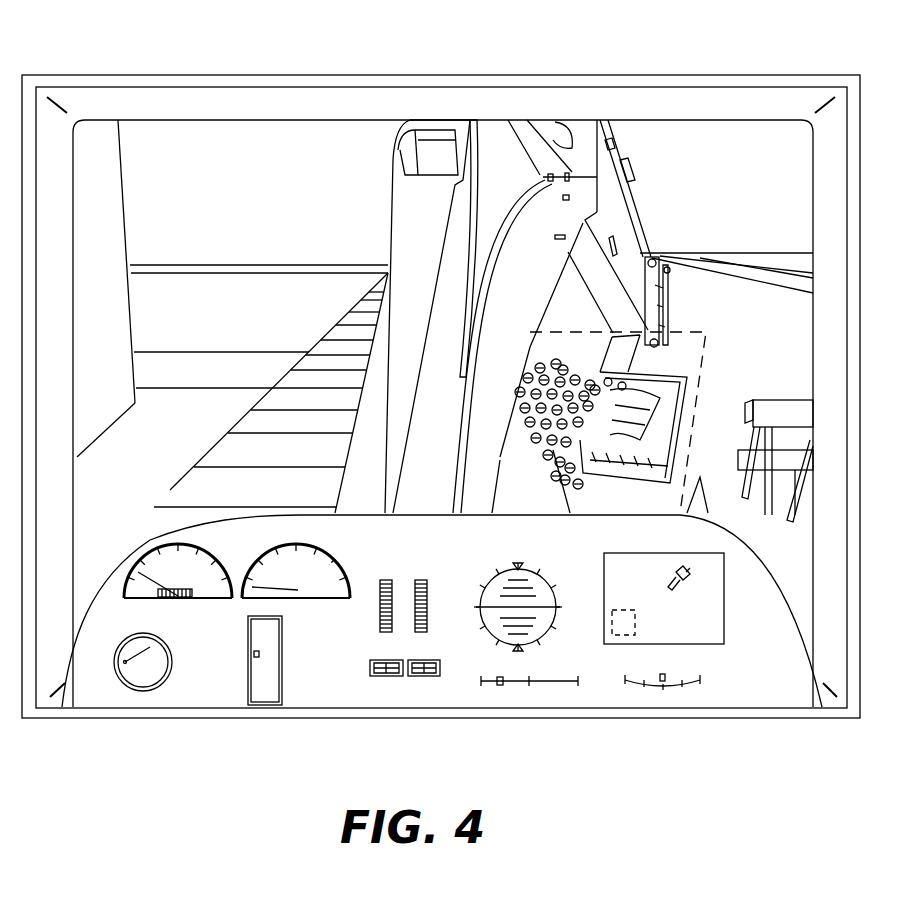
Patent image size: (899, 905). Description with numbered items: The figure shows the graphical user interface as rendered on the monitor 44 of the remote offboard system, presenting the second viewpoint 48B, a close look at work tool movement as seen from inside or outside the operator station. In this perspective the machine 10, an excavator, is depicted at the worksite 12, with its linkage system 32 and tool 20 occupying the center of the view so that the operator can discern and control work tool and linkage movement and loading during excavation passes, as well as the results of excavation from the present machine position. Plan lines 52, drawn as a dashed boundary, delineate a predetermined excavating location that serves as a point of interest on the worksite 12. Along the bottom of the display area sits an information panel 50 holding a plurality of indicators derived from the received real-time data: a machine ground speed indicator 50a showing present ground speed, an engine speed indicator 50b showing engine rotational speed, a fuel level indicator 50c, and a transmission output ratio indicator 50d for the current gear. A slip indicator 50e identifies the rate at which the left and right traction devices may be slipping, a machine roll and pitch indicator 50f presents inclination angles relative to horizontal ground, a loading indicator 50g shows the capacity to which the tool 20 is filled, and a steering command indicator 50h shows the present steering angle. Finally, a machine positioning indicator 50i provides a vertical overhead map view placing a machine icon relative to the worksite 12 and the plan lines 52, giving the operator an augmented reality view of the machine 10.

The monitor 44 is at (783, 112).
The second viewpoint 48B is at (789, 172).
The linkage system 32 is at (640, 196).
The plan lines 52 is at (712, 346).
The worksite 12 is at (790, 314).
The tool 20 is at (680, 408).
The machine 10 is at (678, 573).
The information panel 50 is at (470, 642).
The machine ground speed indicator 50a is at (202, 540).
The engine speed indicator 50b is at (323, 541).
The fuel level indicator 50c is at (186, 662).
The transmission output ratio indicator 50d is at (288, 665).
The slip indicator 50e is at (380, 551).
The machine roll and pitch indicator 50f is at (483, 532).
The loading indicator 50g is at (555, 680).
The steering command indicator 50h is at (726, 687).
The machine positioning indicator 50i is at (688, 583).